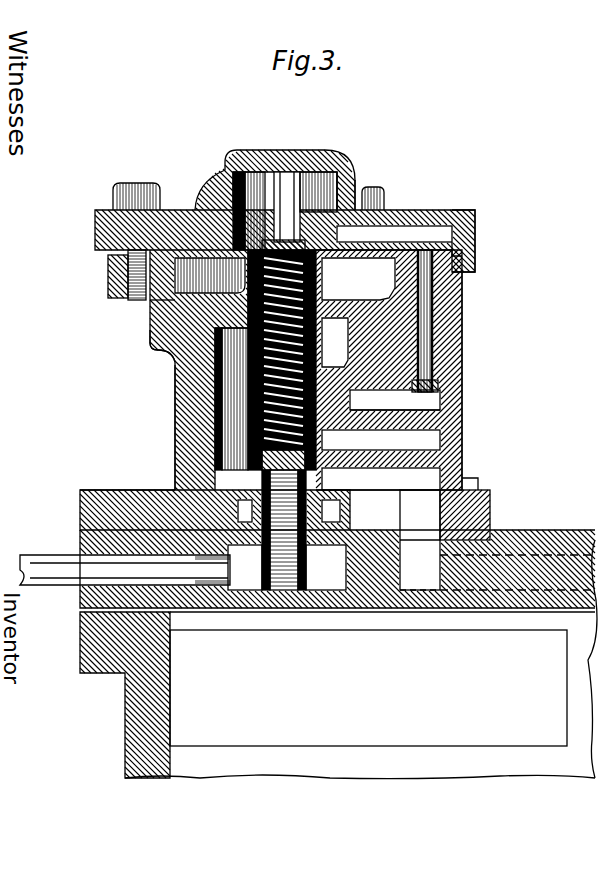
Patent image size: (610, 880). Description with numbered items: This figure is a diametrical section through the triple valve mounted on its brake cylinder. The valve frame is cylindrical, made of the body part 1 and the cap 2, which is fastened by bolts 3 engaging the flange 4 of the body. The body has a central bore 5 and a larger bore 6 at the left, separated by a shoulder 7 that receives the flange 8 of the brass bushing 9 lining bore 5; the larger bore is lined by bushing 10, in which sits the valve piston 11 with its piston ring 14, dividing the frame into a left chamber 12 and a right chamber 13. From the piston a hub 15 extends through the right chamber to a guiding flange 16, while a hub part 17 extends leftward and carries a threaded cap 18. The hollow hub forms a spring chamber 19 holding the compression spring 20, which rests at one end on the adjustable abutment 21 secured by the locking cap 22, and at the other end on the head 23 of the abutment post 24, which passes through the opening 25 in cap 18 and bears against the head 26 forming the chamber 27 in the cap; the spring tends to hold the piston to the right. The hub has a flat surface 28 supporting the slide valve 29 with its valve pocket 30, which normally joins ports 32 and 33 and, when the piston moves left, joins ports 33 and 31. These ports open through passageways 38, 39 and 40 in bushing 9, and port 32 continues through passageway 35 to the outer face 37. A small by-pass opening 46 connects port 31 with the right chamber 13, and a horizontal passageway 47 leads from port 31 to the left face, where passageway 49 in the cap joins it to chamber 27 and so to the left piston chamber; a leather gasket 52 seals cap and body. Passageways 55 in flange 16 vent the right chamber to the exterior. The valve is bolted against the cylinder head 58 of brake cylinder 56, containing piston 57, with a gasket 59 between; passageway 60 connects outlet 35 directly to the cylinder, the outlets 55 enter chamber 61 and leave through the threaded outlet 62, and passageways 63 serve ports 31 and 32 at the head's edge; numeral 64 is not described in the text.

The body part 1 is at (458, 368).
The cap 2 is at (430, 210).
The bolts 3 is at (140, 222).
The flange 4 is at (130, 280).
The central bore 5 is at (200, 426).
The larger bore 6 is at (448, 308).
The shoulder 7 is at (165, 356).
The flange of the bushing 8 is at (160, 337).
The bushing 9 is at (230, 405).
The bushing 10 is at (434, 282).
The valve piston 11 is at (150, 320).
The left chamber 12 is at (198, 210).
The right chamber 13 is at (245, 455).
The piston ring 14 is at (160, 305).
The hub 15 is at (176, 388).
The guiding flange 16 is at (100, 488).
The hub part 17 is at (377, 212).
The cap 18 is at (353, 200).
The spring chamber 19 is at (358, 279).
The compression spring 20 is at (442, 234).
The abutment 21 is at (284, 580).
The locking cap 22 is at (320, 590).
The head 23 is at (327, 185).
The abutment post 24 is at (284, 172).
The opening 25 is at (258, 200).
The head 26 is at (342, 168).
The chamber 27 is at (312, 172).
The flat surface 28 is at (367, 352).
The slide valve 29 is at (425, 345).
The valve pocket 30 is at (405, 525).
The port 31 is at (442, 398).
The port 32 is at (442, 472).
The port 33 is at (442, 437).
The passageway 35 is at (482, 516).
The outer face 37 is at (482, 530).
The passageway 38 is at (430, 385).
The passageway 39 is at (430, 420).
The passageway 40 is at (470, 486).
The by-pass opening 46 is at (436, 333).
The horizontal passageway 47 is at (432, 293).
The passageway 49 is at (460, 228).
The gasket 52 is at (464, 256).
The passageways 55 is at (244, 545).
The brake cylinder 56 is at (140, 718).
The piston 57 is at (287, 738).
The cylinder head 58 is at (92, 595).
The gasket 59 is at (100, 612).
The passageway 60 is at (430, 598).
The chamber 61 is at (458, 568).
The outlet 62 is at (110, 548).
The passageways 63 is at (590, 540).
The bottom 64 is at (604, 742).